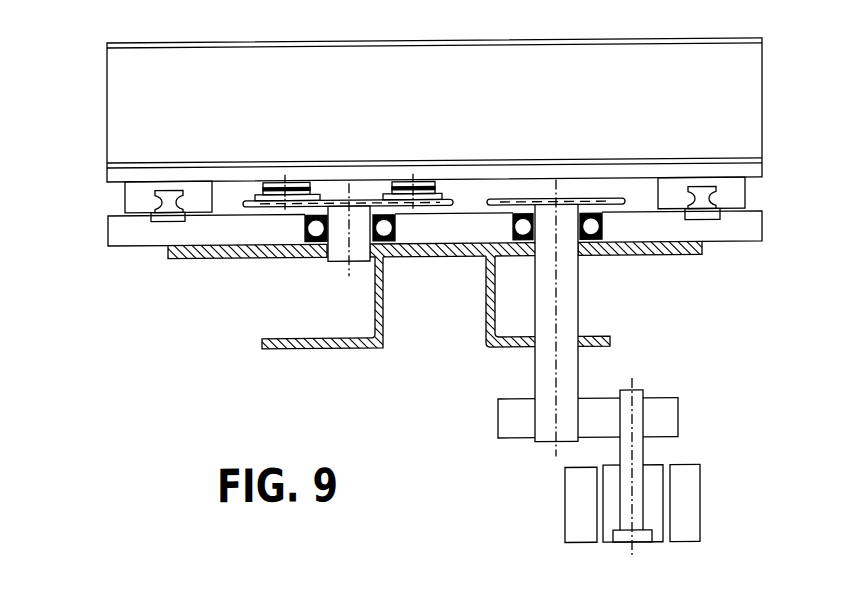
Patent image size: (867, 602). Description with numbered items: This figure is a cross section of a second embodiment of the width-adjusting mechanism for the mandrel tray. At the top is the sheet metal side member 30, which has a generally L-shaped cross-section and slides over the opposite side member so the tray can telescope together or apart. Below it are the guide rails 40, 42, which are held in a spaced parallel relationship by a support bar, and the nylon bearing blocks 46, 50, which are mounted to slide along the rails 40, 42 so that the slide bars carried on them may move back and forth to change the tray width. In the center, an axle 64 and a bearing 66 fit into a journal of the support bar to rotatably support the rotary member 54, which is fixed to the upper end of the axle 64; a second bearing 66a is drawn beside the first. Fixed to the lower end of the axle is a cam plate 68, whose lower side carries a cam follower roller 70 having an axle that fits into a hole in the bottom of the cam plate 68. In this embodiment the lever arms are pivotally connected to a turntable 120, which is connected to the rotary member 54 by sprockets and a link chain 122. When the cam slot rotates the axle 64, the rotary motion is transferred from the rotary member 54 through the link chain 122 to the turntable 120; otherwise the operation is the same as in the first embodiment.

The side member 30 is at (762, 77).
The nylon bearing block 46 is at (130, 192).
The nylon bearing block 50 is at (745, 200).
The guide rail 40 is at (167, 223).
The guide rail 42 is at (708, 224).
The rotary member 54 is at (572, 201).
The axle 64 is at (580, 375).
The bearing 66 is at (312, 260).
The bearing 66a is at (598, 243).
The cam plate 68 is at (678, 414).
The cam follower roller 70 is at (700, 503).
The turntable 120 is at (337, 205).
The link chain 122 is at (468, 206).